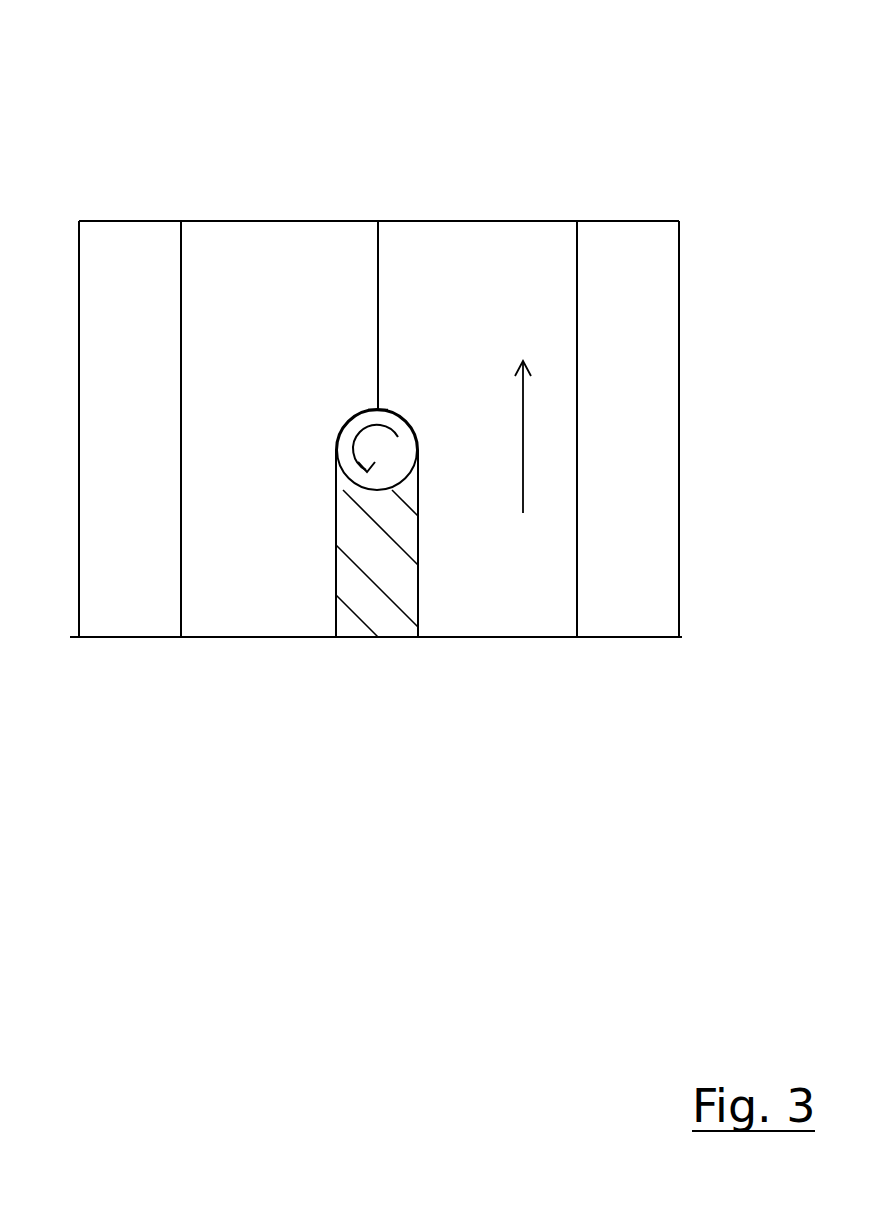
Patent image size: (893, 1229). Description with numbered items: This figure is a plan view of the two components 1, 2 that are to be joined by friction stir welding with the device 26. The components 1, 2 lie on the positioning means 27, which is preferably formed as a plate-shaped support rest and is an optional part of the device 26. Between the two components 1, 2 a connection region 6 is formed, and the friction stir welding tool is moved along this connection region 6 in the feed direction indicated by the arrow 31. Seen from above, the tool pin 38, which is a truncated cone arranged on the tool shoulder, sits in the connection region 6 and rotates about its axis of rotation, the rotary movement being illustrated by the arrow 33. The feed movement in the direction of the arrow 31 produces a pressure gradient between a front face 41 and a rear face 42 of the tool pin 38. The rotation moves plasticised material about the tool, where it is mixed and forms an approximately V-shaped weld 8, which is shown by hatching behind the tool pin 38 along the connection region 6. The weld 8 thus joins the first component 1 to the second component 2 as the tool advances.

The device 26 is at (172, 112).
The positioning means 27 is at (112, 637).
The first component 1 is at (267, 617).
The second component 2 is at (487, 615).
The connection region 6 is at (380, 245).
The weld 8 is at (385, 618).
The arrow 33 is at (366, 428).
The front face 41 is at (378, 410).
The tool pin 38 is at (383, 448).
The rear face 42 is at (378, 490).
The arrow 31 is at (523, 513).